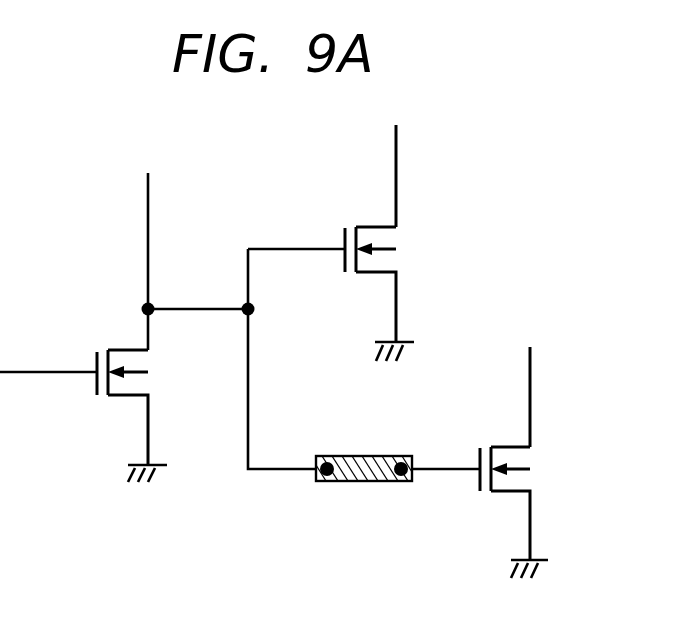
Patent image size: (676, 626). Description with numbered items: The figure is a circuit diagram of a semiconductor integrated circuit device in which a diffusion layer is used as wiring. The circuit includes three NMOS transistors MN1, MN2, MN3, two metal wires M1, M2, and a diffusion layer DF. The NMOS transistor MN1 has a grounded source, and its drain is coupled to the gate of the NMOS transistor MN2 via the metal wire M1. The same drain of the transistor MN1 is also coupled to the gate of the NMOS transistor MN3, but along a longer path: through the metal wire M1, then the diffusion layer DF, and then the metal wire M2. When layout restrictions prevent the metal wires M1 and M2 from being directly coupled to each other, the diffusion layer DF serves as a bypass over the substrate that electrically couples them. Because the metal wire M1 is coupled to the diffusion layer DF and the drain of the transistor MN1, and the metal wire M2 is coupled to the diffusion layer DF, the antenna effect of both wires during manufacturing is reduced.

The NMOS transistor MN1 is at (123, 349).
The NMOS transistor MN2 is at (368, 226).
The NMOS transistor MN3 is at (504, 446).
The metal wire M1 is at (250, 366).
The metal wire M2 is at (436, 472).
The diffusion layer DF is at (341, 481).